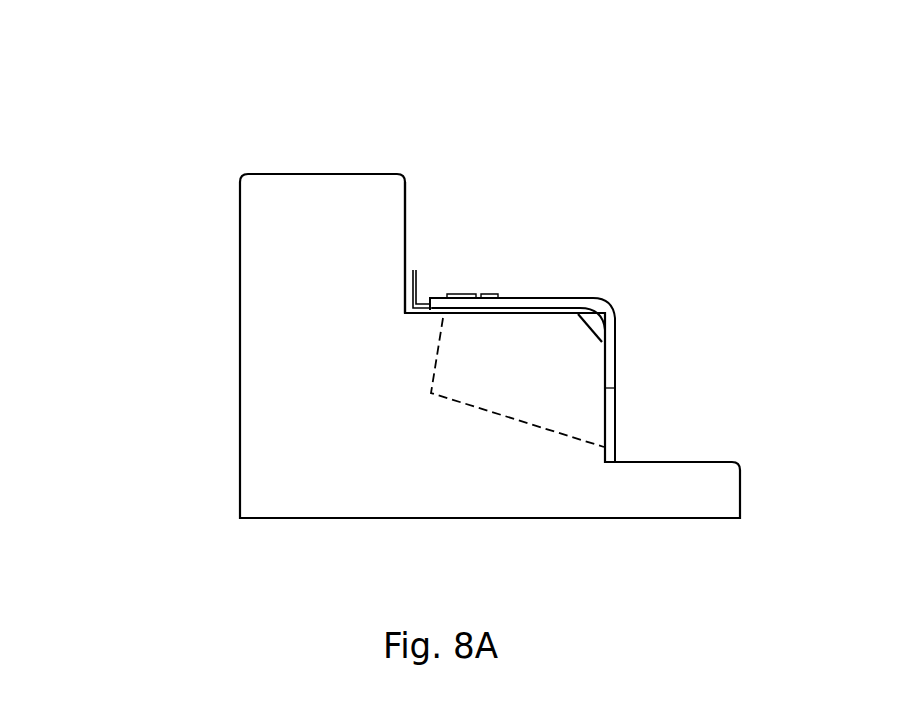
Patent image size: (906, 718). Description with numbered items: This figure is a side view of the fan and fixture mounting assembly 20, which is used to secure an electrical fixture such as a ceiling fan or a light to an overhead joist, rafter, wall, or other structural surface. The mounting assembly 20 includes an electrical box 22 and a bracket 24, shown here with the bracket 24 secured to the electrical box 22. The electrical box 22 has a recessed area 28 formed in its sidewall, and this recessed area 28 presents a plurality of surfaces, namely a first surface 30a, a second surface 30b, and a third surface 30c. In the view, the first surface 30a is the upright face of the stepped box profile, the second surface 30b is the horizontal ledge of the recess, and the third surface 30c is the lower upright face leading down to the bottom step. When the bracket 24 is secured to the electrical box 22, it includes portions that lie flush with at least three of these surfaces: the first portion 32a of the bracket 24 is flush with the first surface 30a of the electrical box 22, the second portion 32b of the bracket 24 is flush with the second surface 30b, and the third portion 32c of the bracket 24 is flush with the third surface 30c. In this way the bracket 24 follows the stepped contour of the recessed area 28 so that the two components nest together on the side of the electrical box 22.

The fan and fixture mounting assembly 20 is at (188, 142).
The electrical box 22 is at (240, 243).
The bracket 24 is at (607, 300).
The recessed area 28 is at (622, 212).
The first surface 30a is at (410, 200).
The second surface 30b is at (517, 300).
The third surface 30c is at (607, 365).
The first portion 32a is at (416, 274).
The second portion 32b is at (548, 302).
The third portion 32c is at (605, 388).